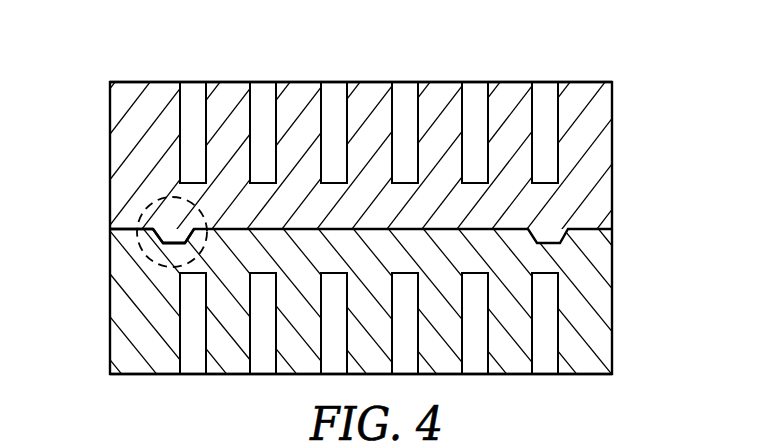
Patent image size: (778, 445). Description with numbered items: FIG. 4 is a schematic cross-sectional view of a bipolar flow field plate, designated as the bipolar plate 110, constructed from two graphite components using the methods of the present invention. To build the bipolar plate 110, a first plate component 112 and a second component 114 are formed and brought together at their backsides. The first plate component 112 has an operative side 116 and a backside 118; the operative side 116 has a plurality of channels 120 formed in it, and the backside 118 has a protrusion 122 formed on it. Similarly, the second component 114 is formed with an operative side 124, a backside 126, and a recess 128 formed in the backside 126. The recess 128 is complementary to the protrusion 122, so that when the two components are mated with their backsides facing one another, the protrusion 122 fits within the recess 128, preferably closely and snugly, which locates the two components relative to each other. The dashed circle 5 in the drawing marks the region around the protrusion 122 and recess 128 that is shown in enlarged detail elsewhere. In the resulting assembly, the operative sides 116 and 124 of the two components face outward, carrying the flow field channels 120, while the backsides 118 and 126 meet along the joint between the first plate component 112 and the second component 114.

The bipolar plate 110 is at (632, 52).
The first plate component 112 is at (603, 162).
The second component 114 is at (603, 313).
The operative side 116 is at (157, 82).
The backside 118 is at (111, 245).
The channels 120 is at (253, 97).
The protrusion 122 is at (160, 242).
The operative side 124 is at (583, 375).
The backside 126 is at (610, 222).
The recess 128 is at (171, 242).
The detail region of FIG. 5 is at (153, 200).